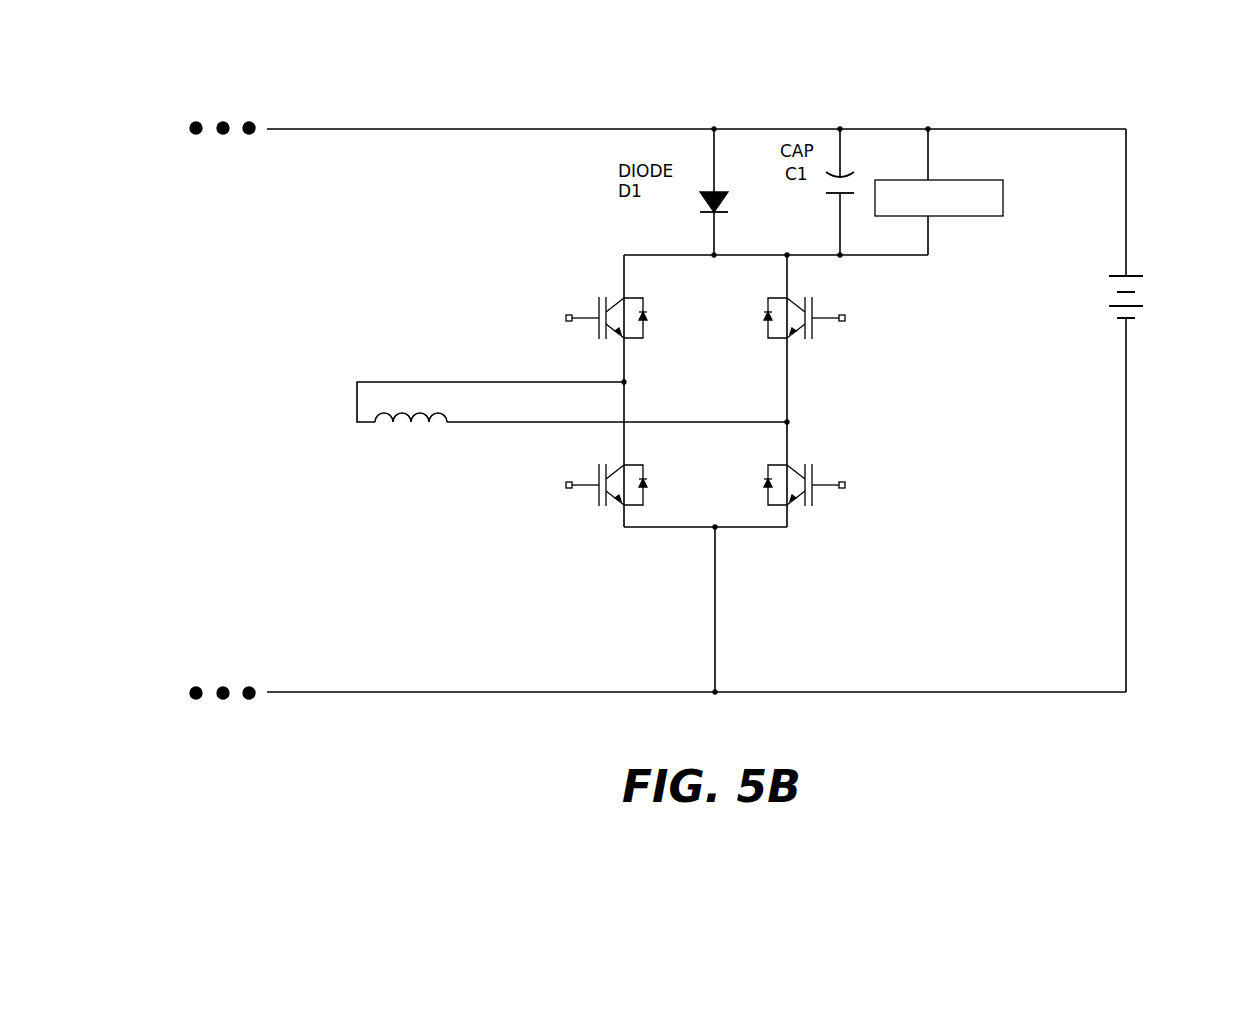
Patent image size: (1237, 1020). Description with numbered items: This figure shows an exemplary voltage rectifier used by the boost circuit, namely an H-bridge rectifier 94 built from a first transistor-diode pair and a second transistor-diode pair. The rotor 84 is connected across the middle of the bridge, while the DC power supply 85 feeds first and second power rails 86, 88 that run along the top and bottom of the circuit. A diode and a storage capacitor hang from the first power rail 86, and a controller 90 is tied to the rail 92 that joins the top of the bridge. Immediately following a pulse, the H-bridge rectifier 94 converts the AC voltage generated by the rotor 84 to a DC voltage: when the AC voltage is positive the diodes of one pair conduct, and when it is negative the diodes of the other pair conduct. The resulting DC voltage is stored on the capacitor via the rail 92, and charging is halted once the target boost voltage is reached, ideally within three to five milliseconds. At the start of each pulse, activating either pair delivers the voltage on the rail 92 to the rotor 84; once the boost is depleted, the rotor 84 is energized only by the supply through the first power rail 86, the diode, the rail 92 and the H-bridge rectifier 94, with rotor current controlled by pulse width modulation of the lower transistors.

The rotor 84 is at (423, 485).
The DC power supply 85 is at (1138, 256).
The first power rail 86 is at (613, 129).
The second power rail 88 is at (899, 693).
The controller 90 is at (972, 217).
The rail 92 is at (893, 256).
The H-bridge rectifier 94 is at (768, 541).